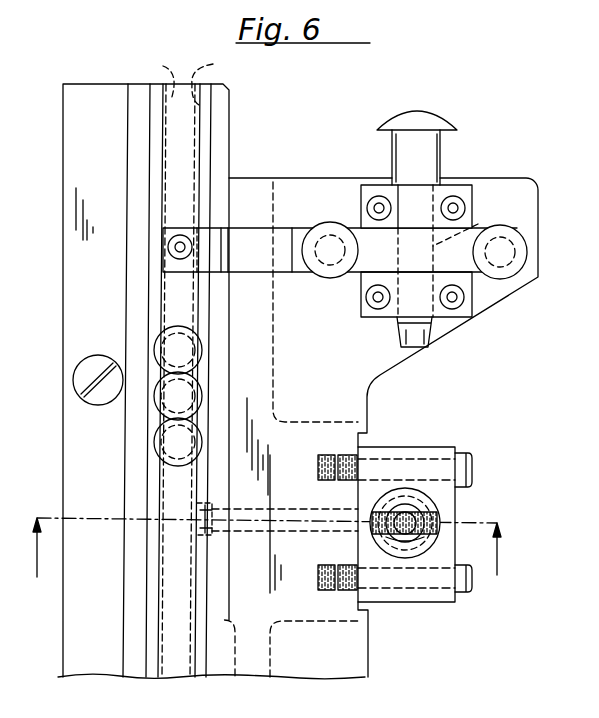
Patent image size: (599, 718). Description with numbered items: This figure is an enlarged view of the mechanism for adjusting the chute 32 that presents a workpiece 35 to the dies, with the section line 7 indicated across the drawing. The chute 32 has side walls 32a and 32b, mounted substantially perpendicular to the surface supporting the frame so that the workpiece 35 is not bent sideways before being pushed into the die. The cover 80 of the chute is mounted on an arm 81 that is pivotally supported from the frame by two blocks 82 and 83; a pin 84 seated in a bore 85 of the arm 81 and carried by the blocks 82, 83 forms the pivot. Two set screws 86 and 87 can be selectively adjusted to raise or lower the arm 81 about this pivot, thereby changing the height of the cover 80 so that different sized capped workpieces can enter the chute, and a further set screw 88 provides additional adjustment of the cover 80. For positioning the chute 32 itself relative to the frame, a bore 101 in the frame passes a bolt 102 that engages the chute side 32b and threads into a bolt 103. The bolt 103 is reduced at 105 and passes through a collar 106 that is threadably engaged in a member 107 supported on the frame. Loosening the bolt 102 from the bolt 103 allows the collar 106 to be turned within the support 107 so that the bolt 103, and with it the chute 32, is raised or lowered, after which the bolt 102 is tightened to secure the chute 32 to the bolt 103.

The chute 32 is at (68, 108).
The chute side wall 32a is at (149, 79).
The chute side wall 32b is at (227, 83).
The workpiece 35 is at (196, 357).
The chute cover 80 is at (180, 140).
The arm 81 is at (262, 248).
The block 82 is at (462, 192).
The block 83 is at (465, 318).
The pin 84 is at (398, 165).
The bore 85 is at (472, 224).
The set screw 86 is at (340, 258).
The set screw 87 is at (526, 251).
The set screw 88 is at (168, 248).
The bore 101 is at (297, 508).
The bolt 102 is at (240, 533).
The bolt 103 is at (430, 503).
The reduced portion 105 is at (405, 510).
The collar 106 is at (413, 557).
The member 107 is at (450, 450).
The section line 7- 7 is at (267, 570).